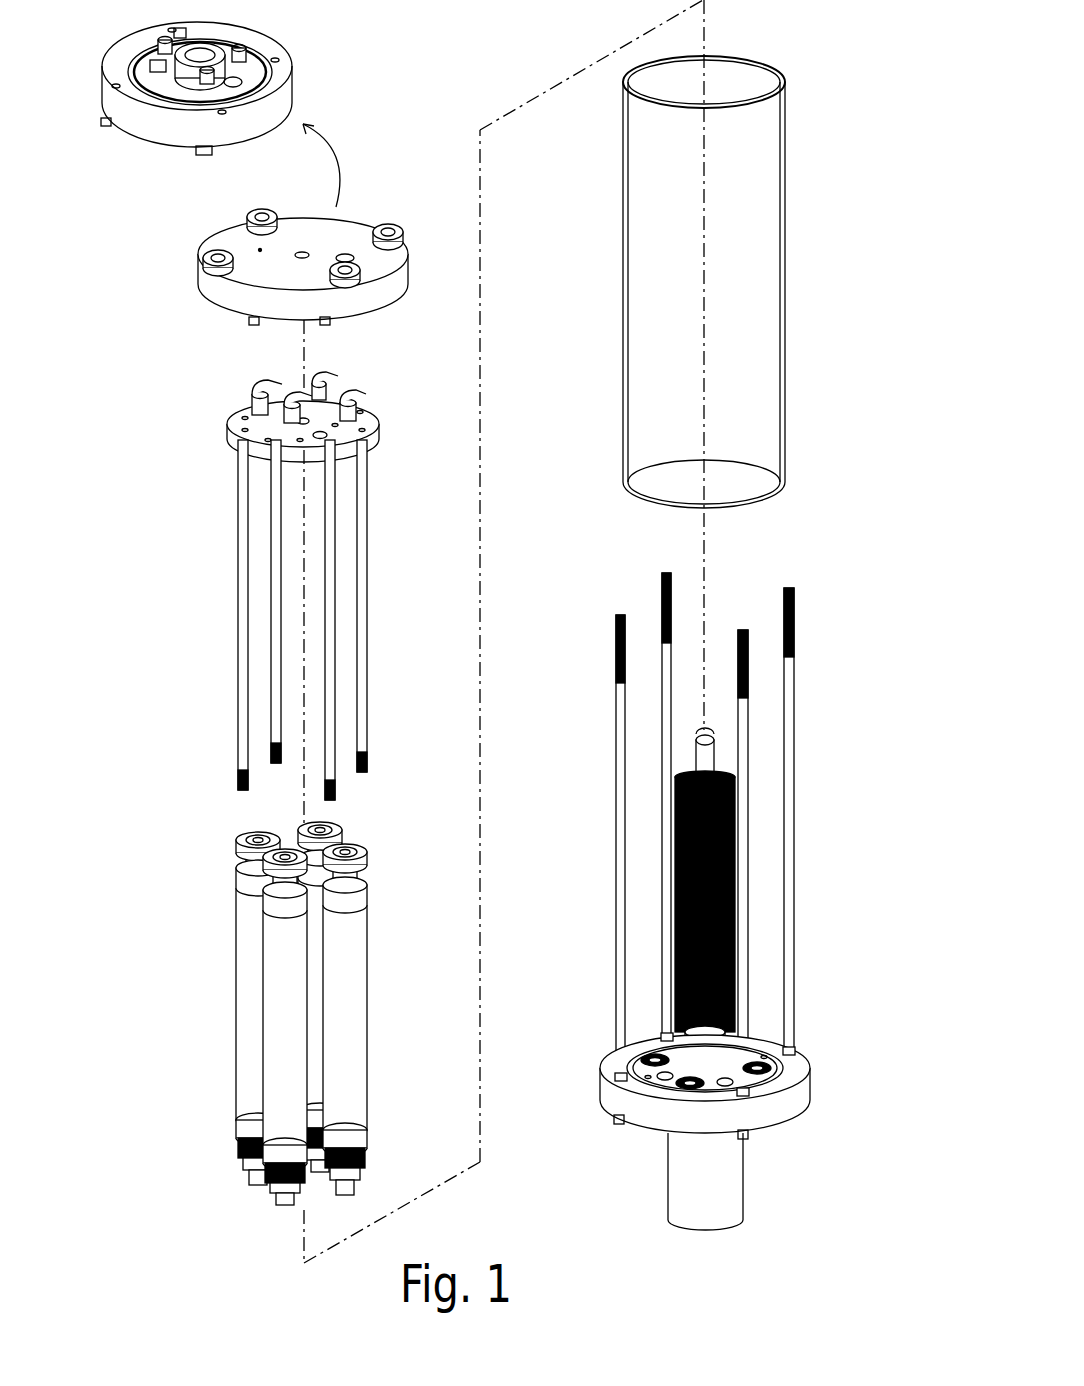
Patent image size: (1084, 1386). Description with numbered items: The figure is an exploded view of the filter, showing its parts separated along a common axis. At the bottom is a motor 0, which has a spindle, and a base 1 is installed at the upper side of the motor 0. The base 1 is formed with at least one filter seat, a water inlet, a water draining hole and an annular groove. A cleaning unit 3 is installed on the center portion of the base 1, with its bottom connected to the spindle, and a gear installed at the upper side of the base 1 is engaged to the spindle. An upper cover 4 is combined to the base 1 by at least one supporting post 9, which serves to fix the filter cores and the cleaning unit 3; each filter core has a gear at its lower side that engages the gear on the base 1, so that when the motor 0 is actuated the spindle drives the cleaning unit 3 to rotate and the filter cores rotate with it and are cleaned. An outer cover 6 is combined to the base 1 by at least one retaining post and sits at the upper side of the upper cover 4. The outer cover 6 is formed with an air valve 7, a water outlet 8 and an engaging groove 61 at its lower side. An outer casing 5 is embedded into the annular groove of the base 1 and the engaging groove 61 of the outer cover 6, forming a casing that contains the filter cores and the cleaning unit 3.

The motor 0 is at (728, 1178).
The base 1 is at (785, 1108).
The cleaning unit 3 is at (735, 857).
The upper cover 4 is at (238, 442).
The outer casing 5 is at (783, 298).
The outer cover 6 is at (302, 256).
The engaging groove 61 is at (267, 78).
The air valve 7 is at (260, 250).
The water outlet 8 is at (345, 256).
The supporting posts 9 is at (245, 608).